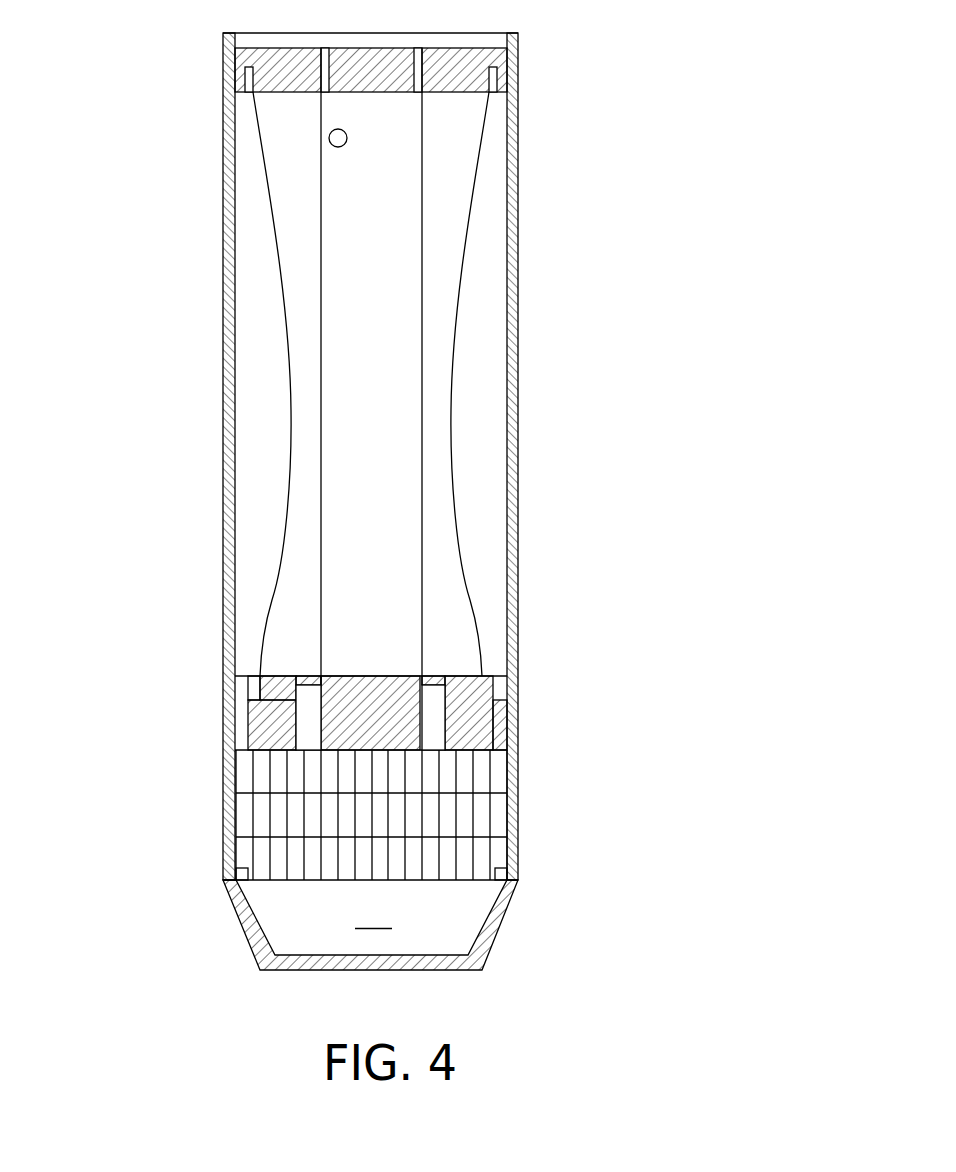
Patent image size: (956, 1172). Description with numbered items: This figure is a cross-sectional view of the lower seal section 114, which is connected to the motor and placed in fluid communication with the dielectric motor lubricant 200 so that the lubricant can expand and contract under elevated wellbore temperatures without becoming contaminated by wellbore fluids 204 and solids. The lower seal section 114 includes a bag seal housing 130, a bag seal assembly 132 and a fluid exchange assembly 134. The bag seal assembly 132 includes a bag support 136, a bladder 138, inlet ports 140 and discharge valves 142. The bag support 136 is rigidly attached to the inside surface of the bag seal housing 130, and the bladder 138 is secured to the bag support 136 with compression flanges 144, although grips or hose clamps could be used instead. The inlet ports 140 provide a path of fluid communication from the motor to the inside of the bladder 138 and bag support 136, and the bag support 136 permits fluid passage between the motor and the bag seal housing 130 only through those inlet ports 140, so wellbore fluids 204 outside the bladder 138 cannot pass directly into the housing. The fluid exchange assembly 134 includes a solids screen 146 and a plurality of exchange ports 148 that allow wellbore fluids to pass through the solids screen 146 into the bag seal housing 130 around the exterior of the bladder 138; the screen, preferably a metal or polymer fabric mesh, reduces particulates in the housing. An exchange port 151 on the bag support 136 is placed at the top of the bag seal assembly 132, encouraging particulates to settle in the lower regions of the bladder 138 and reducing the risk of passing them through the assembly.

The lower seal section 114 is at (697, 463).
The bag seal housing 130 is at (519, 350).
The bag seal assembly 132 is at (270, 387).
The fluid exchange assembly 134 is at (545, 812).
The bag support 136 is at (420, 137).
The bladder 138 is at (467, 222).
The inlet ports 140 is at (323, 58).
The discharge valves 142 is at (296, 731).
The compression flanges 144 is at (242, 78).
The solids screen 146 is at (224, 805).
The exchange ports 148 is at (224, 702).
The exchange port 151 is at (329, 140).
The motor lubricant 200 is at (439, 490).
The wellbore fluids 204 is at (480, 584).